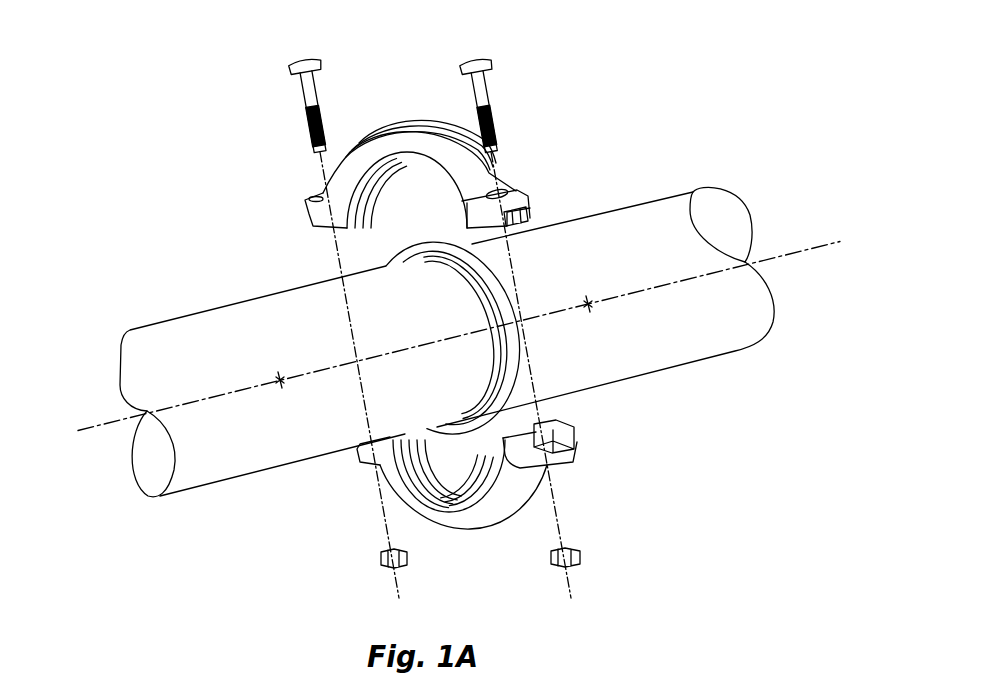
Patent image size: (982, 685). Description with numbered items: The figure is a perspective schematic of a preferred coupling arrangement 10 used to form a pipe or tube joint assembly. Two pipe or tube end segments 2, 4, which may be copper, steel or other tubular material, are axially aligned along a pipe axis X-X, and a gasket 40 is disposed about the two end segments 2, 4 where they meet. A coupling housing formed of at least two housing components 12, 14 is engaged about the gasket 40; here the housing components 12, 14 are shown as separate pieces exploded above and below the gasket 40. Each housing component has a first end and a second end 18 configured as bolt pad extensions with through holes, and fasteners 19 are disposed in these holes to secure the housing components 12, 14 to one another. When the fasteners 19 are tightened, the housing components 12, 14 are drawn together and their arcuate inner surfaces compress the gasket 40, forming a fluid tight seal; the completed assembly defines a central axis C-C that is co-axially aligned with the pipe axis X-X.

The pipe end segment 2 is at (180, 330).
The pipe end segment 4 is at (647, 200).
The coupling arrangement 10 is at (648, 78).
The housing component 12 is at (411, 146).
The housing component 14 is at (475, 521).
The second end 18 is at (317, 195).
The fastener 19 is at (293, 93).
The gasket 40 is at (512, 356).